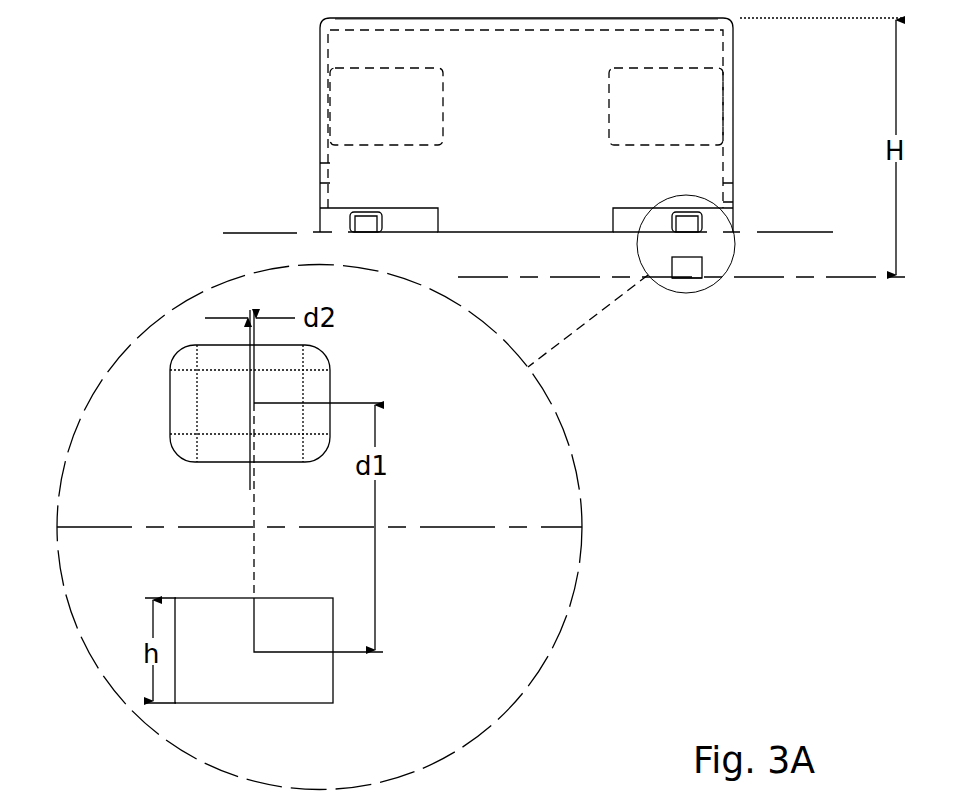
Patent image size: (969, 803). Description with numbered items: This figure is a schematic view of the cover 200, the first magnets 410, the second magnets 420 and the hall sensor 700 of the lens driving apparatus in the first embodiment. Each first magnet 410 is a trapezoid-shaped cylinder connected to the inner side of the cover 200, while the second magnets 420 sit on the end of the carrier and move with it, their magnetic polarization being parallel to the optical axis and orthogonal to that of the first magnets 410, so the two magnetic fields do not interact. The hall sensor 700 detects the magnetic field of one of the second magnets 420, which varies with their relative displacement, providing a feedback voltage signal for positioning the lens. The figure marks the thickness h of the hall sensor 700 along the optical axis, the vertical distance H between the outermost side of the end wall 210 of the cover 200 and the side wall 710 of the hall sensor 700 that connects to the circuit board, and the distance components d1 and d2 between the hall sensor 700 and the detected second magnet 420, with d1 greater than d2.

The cover 200 is at (322, 163).
The end wall 210 is at (373, 18).
The first magnet 410 is at (385, 68).
The second magnet 420 is at (366, 222).
The hall sensor 700 is at (688, 268).
The side wall 710 is at (676, 281).